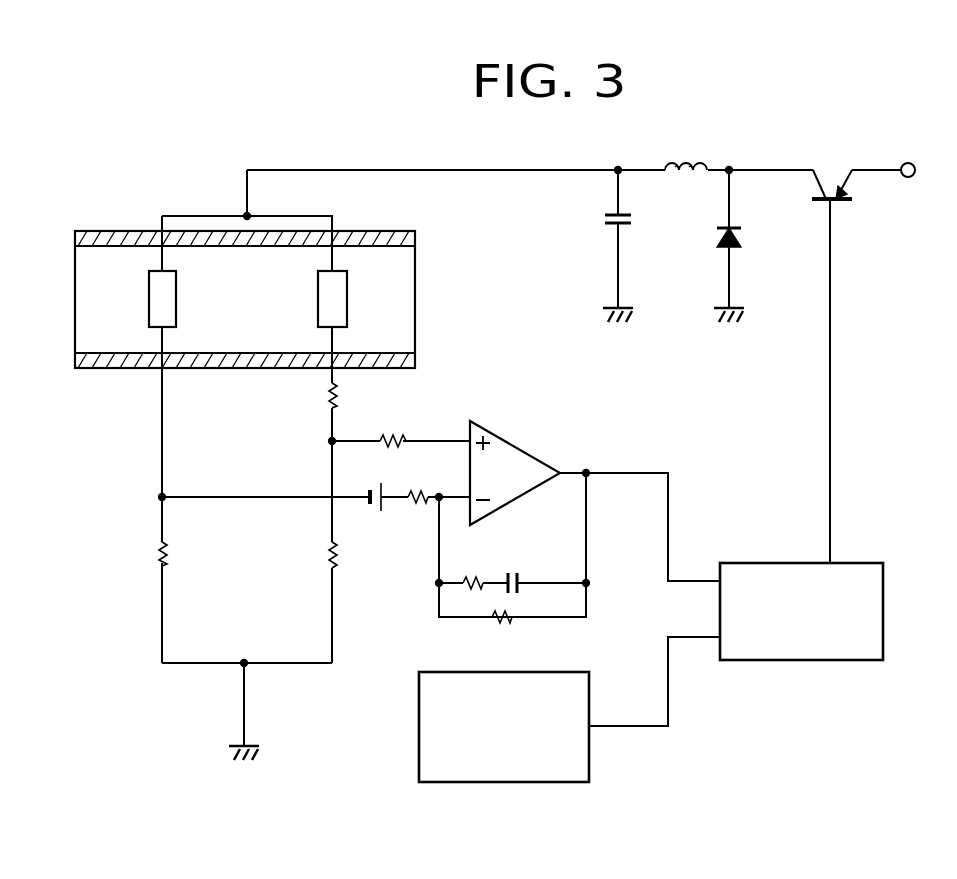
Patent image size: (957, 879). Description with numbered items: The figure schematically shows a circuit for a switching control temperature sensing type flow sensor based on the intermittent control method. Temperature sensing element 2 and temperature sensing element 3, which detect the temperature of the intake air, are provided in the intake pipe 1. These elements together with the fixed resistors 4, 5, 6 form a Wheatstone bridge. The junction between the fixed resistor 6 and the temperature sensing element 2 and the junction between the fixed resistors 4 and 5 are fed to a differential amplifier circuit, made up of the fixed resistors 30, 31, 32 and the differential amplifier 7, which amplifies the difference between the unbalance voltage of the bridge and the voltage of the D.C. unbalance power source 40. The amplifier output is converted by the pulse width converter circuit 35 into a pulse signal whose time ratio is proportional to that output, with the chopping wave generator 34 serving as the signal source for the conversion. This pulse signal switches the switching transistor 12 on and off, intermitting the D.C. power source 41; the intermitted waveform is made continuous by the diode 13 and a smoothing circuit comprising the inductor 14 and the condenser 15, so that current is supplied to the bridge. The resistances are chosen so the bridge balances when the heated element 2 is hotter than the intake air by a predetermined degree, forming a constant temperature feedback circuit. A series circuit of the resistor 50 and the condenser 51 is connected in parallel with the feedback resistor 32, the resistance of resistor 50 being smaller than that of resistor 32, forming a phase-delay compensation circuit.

The intake pipe 1 is at (350, 232).
The temperature sensing element 2 is at (149, 300).
The temperature sensing element 3 is at (348, 300).
The fixed resistor 4 is at (323, 395).
The fixed resistor 5 is at (323, 551).
The fixed resistor 6 is at (172, 548).
The differential amplifier 7 is at (505, 445).
The switching transistor 12 is at (838, 202).
The diode 13 is at (745, 236).
The inductor 14 is at (683, 162).
The condenser 15 is at (633, 217).
The fixed resistor 30 is at (385, 434).
The fixed resistor 31 is at (411, 490).
The feedback resistor 32 is at (500, 622).
The chopping wave generator 34 is at (590, 752).
The pulse width converter circuit 35 is at (885, 615).
The D.C. unbalance power source 40 is at (384, 505).
The D.C. power source 41 is at (906, 163).
The resistor 50 is at (468, 578).
The condenser 51 is at (521, 578).